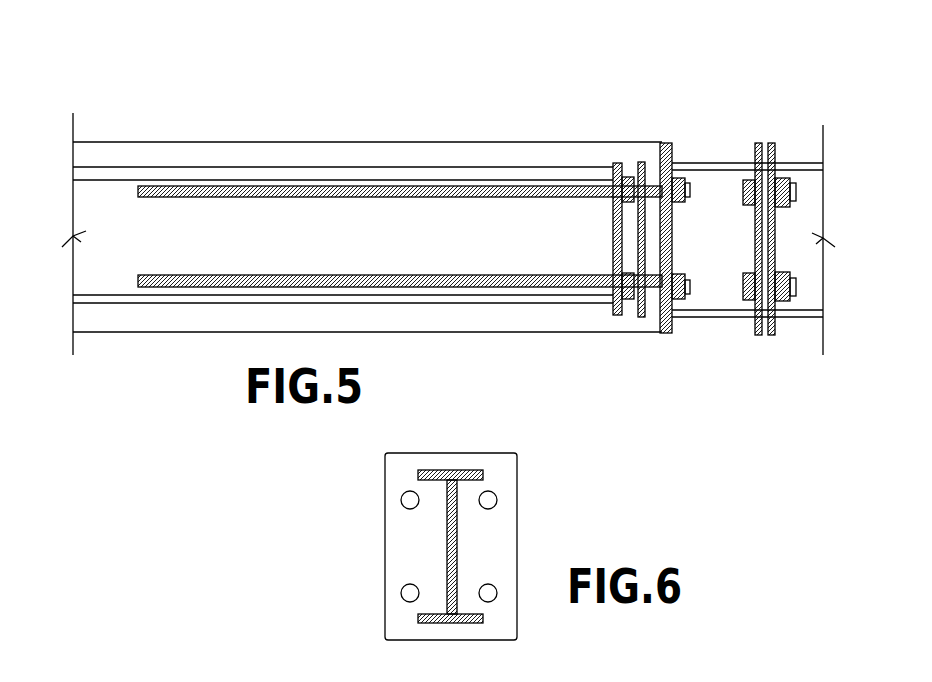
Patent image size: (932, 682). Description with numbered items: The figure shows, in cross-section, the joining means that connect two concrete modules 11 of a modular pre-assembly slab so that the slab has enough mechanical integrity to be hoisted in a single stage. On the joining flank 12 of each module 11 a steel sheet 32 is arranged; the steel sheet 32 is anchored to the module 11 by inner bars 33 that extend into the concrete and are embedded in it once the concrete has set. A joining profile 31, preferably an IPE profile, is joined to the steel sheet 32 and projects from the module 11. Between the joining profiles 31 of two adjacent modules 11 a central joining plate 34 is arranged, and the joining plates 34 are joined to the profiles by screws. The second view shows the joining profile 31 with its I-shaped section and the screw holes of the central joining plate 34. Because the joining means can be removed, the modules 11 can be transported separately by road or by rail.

In FIG. 5, the module 11 is at (552, 320).
In FIG. 5, the joining flank 12 is at (662, 333).
In FIG. 5, the joining profile 31 is at (813, 202).
In FIG. 6, the joining profile 31 is at (447, 522).
In FIG. 5, the steel sheet 32 is at (672, 143).
In FIG. 5, the inner bar 33 is at (260, 197).
In FIG. 5, the central joining plate 34 is at (773, 143).
In FIG. 6, the central joining plate 34 is at (400, 566).